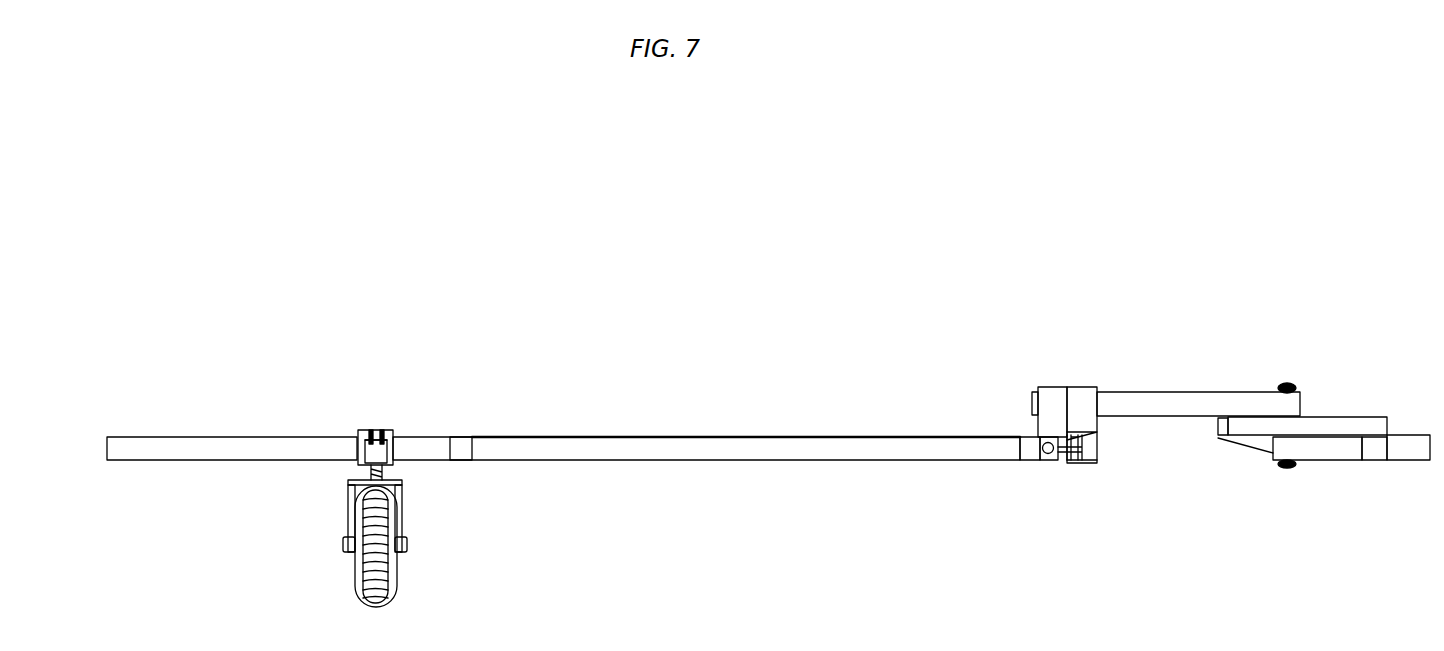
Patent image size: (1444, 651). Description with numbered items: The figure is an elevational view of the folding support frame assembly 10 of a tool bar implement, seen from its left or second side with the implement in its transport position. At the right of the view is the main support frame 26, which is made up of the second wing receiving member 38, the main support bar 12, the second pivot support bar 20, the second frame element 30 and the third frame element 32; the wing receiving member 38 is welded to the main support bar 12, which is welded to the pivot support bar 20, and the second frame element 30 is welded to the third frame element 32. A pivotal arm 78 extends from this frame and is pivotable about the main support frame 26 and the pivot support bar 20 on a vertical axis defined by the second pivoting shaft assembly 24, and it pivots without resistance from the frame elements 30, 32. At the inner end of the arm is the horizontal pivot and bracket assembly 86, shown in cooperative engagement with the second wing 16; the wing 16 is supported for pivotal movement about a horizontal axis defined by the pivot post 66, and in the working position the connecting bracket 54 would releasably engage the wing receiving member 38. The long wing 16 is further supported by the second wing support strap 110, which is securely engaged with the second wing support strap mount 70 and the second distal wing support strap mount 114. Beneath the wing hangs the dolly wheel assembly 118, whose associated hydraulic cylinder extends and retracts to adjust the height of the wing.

The folding support frame assembly 10 is at (718, 277).
The main support bar 12 is at (1377, 451).
The second wing 16 is at (243, 436).
The second pivot support bar 20 is at (1313, 462).
The second pivoting shaft assembly 24 is at (1287, 380).
The main support frame 26 is at (1213, 550).
The second frame element 30 is at (1353, 415).
The third frame element 32 is at (1218, 430).
The second wing receiving member 38 is at (1415, 461).
The connecting bracket 54 is at (1098, 454).
The pivot post 66 is at (1049, 461).
The second wing support strap mount 70 is at (1030, 437).
The pivotal arm 78 is at (1175, 390).
The horizontal pivot and bracket assembly 86 is at (1015, 550).
The second wing support strap 110 is at (733, 437).
The second distal wing support strap mount 114 is at (455, 437).
The dolly wheel assembly 118 is at (377, 432).